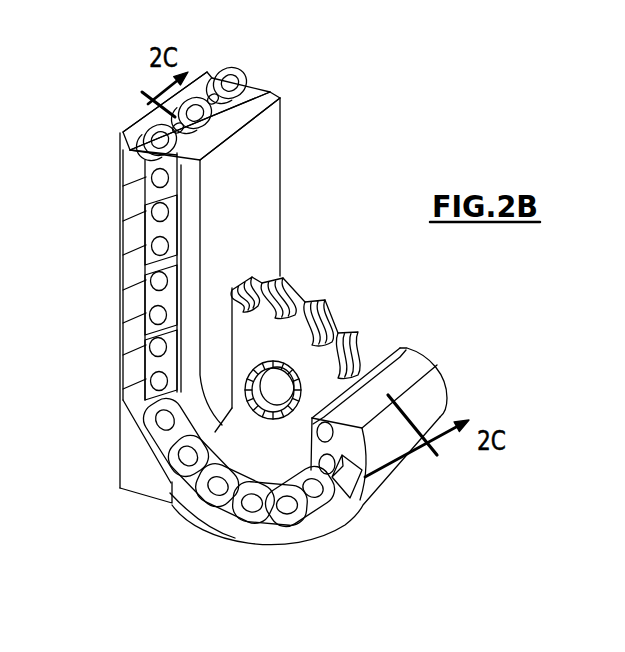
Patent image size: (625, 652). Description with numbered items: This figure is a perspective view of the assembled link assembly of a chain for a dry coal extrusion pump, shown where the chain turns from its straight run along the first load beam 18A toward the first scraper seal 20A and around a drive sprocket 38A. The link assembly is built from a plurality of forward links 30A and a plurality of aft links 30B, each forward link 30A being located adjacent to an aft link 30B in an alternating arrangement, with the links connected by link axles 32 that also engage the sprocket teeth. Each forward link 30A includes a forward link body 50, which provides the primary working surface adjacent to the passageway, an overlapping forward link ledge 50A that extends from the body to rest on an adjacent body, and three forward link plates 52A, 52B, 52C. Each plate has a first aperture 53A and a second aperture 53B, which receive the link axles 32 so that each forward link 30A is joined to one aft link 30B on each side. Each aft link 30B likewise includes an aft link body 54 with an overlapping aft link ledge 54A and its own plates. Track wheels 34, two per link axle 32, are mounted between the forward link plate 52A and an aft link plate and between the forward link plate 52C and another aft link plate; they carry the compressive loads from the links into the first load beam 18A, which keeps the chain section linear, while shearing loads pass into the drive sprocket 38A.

The first load beam 18A is at (263, 212).
The first scraper seal 20A is at (137, 468).
The forward link 30A is at (463, 377).
The aft link 30B is at (448, 507).
The link axle 32 is at (230, 478).
The track wheel 34 is at (250, 458).
The drive sprocket 38A is at (347, 337).
The forward link body 50 is at (133, 168).
The forward link ledge 50A is at (152, 115).
The forward link plate 52A is at (163, 121).
The forward link plate 52B is at (188, 98).
The forward link plate 52C is at (254, 78).
The first aperture 53A is at (155, 191).
The second aperture 53B is at (201, 161).
The aft link body 54 is at (370, 486).
The aft link ledge 54A is at (350, 507).